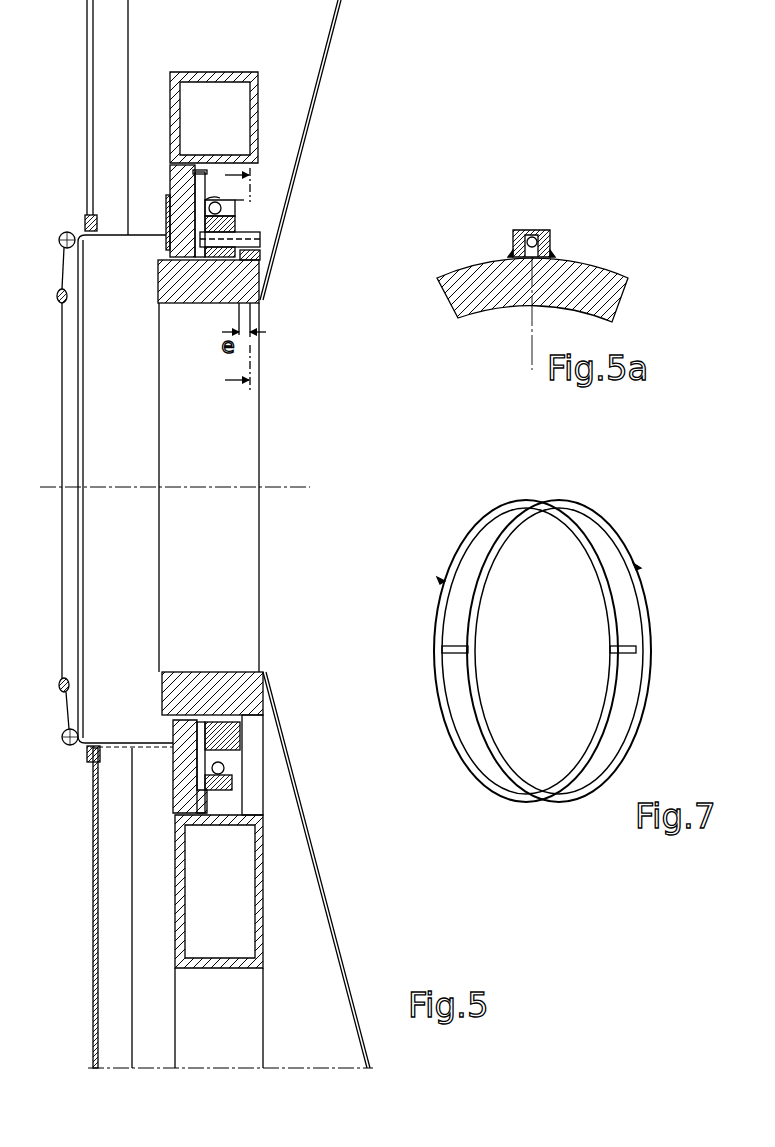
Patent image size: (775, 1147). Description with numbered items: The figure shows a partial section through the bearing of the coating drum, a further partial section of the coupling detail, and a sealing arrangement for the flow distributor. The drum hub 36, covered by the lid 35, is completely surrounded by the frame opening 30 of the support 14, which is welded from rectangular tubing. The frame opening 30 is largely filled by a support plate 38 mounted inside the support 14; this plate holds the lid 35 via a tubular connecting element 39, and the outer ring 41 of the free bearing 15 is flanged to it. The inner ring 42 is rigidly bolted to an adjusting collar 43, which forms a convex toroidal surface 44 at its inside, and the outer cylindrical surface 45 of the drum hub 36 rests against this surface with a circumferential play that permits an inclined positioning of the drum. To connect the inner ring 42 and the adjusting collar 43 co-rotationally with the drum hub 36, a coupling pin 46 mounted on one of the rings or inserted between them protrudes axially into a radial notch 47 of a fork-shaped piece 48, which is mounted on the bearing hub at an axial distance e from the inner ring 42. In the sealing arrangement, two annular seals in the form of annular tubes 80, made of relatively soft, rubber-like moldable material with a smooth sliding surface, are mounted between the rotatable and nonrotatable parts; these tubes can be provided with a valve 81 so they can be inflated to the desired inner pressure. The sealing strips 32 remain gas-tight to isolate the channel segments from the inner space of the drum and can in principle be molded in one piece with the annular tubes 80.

In FIG. 5, the support 14 is at (260, 70).
In FIG. 5, the free bearing 15 is at (245, 208).
In FIG. 5, the frame opening 30 is at (250, 797).
In FIG. 7, the sealing strips 32 is at (450, 660).
In FIG. 5, the lid 35 is at (62, 626).
In FIG. 5, the drum hub 36 is at (180, 685).
In FIG. 5A, the drum hub 36 is at (456, 280).
In FIG. 5, the support plate 38 is at (170, 190).
In FIG. 5, the tubular connecting element 39 is at (112, 236).
In FIG. 5, the outer ring 41 is at (232, 194).
In FIG. 5, the inner ring 42 is at (254, 221).
In FIG. 5, the adjusting collar 43 is at (200, 262).
In FIG. 5, the convex toroidal surface 44 is at (214, 262).
In FIG. 5, the outer cylindrical surface 45 is at (160, 730).
In FIG. 5, the coupling pin 46 is at (261, 253).
In FIG. 5A, the coupling pin 46 is at (545, 230).
In FIG. 5A, the radial notch 47 is at (530, 232).
In FIG. 5A, the fork-shaped piece 48 is at (552, 254).
In FIG. 7, the annular tubes 80 is at (503, 534).
In FIG. 7, the valve 81 is at (636, 566).